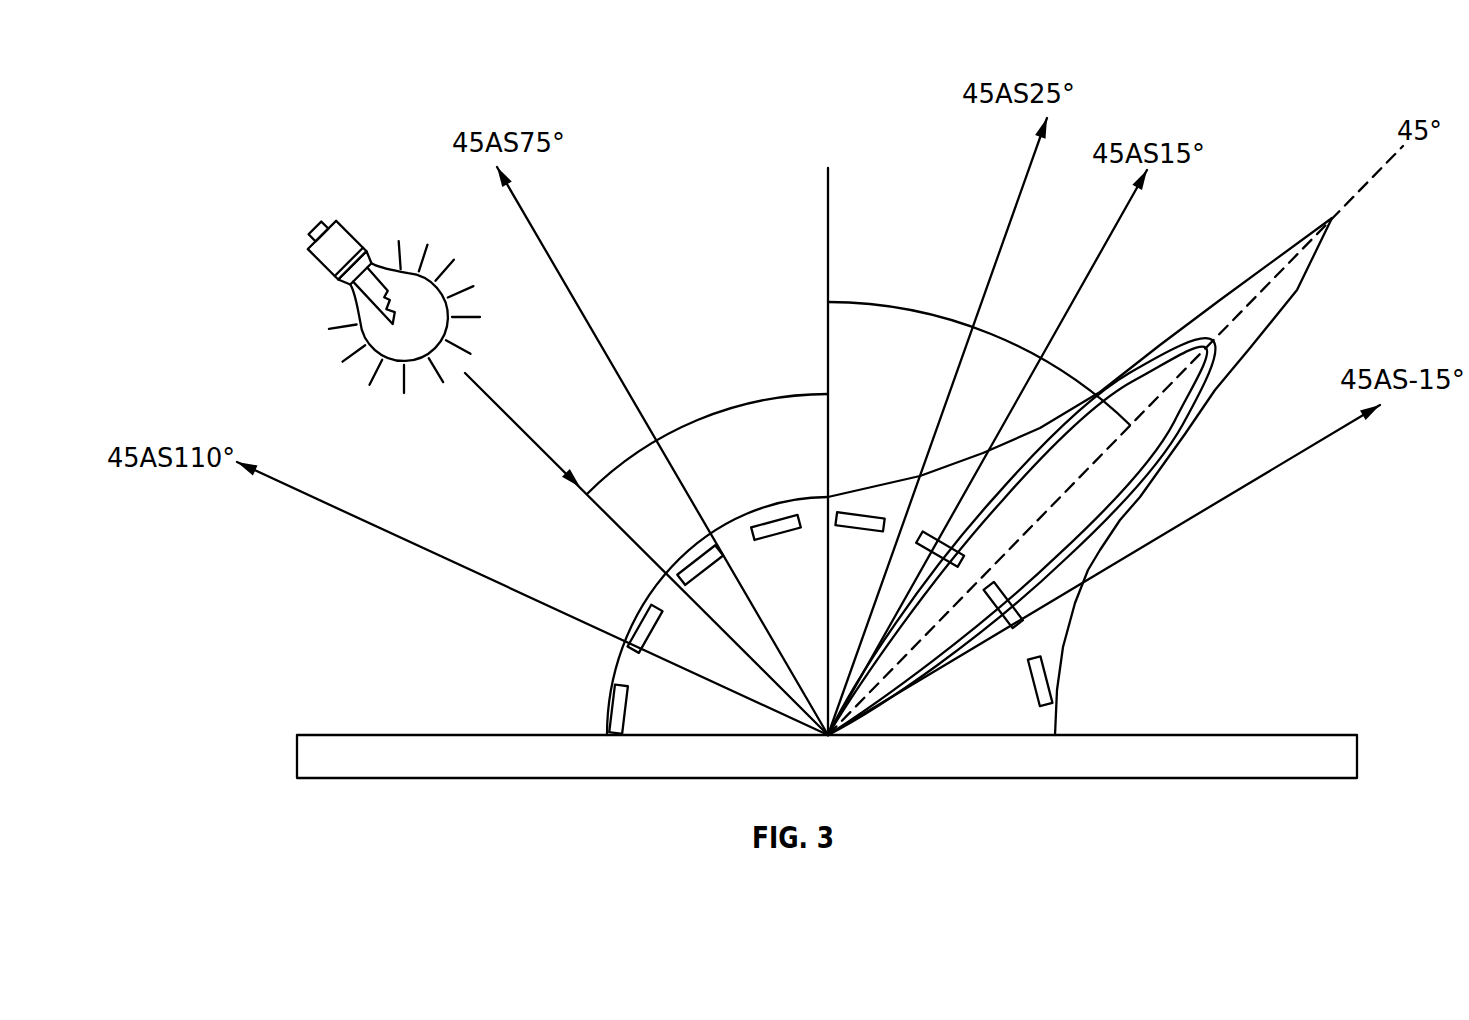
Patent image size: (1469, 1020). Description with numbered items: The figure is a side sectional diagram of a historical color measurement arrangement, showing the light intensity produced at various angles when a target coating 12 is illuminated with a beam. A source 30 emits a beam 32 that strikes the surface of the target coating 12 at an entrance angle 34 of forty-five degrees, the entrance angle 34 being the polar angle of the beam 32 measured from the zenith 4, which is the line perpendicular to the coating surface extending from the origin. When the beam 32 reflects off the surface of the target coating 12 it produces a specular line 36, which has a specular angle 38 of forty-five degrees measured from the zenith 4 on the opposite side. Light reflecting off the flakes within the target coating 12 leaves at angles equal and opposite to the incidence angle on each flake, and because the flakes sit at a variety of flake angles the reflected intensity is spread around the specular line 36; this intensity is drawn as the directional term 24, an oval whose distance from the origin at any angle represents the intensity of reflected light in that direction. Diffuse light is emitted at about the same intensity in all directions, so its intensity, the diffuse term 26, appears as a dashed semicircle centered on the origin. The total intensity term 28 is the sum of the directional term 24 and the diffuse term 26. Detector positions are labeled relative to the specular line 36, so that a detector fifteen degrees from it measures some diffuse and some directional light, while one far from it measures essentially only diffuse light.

The zenith 4 is at (828, 232).
The target coating 12 is at (1228, 748).
The directional term 24 is at (1128, 424).
The diffuse term 26 is at (1040, 693).
The total intensity term 28 is at (1298, 288).
The source 30 is at (350, 232).
The beam 32 is at (523, 430).
The entrance angle 34 is at (752, 402).
The specular line 36 is at (1362, 188).
The specular angle 38 is at (886, 302).